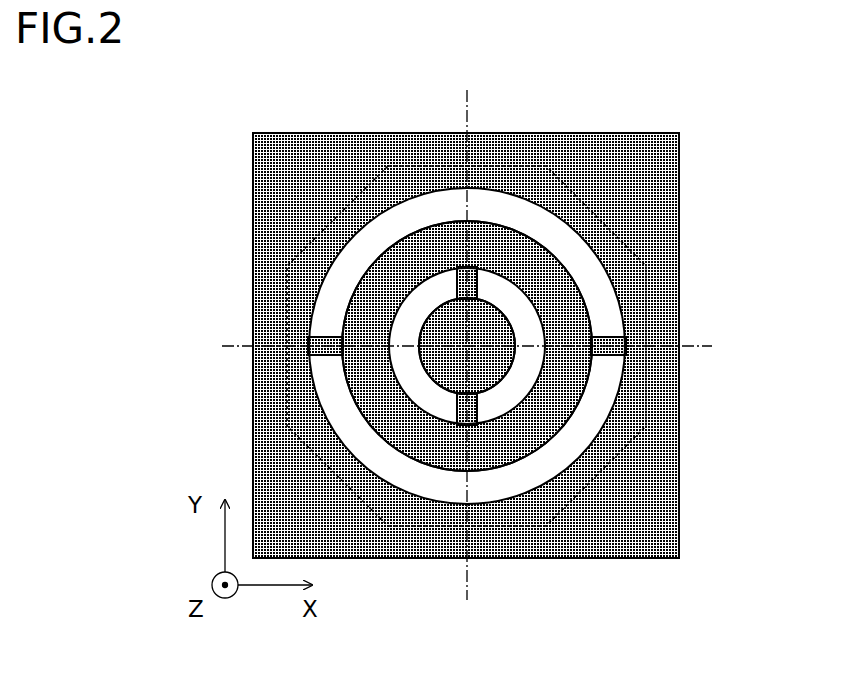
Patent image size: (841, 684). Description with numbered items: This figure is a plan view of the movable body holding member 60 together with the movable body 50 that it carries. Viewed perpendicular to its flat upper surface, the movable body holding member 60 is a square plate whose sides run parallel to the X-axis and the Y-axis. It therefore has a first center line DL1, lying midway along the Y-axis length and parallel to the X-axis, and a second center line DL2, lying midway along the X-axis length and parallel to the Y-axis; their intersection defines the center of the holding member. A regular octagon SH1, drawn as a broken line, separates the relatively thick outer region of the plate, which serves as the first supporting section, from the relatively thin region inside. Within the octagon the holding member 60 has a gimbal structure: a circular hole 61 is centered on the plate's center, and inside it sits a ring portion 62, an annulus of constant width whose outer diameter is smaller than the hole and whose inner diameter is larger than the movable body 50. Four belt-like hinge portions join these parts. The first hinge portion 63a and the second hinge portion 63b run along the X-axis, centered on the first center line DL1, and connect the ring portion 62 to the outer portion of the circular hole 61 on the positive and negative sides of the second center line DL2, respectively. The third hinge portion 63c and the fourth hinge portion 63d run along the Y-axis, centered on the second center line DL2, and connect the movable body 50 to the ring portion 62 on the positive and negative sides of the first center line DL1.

The movable body holding member 60 is at (680, 238).
The regular octagon SH1 is at (602, 202).
The ring portion 62 is at (553, 446).
The circular hole 61 is at (606, 398).
The movable body 50 is at (513, 322).
The first hinge portion 63a is at (607, 356).
The second hinge portion 63b is at (316, 358).
The third hinge portion 63c is at (455, 283).
The fourth hinge portion 63d is at (477, 408).
The first center line DL1 is at (493, 344).
The second center line DL2 is at (467, 328).